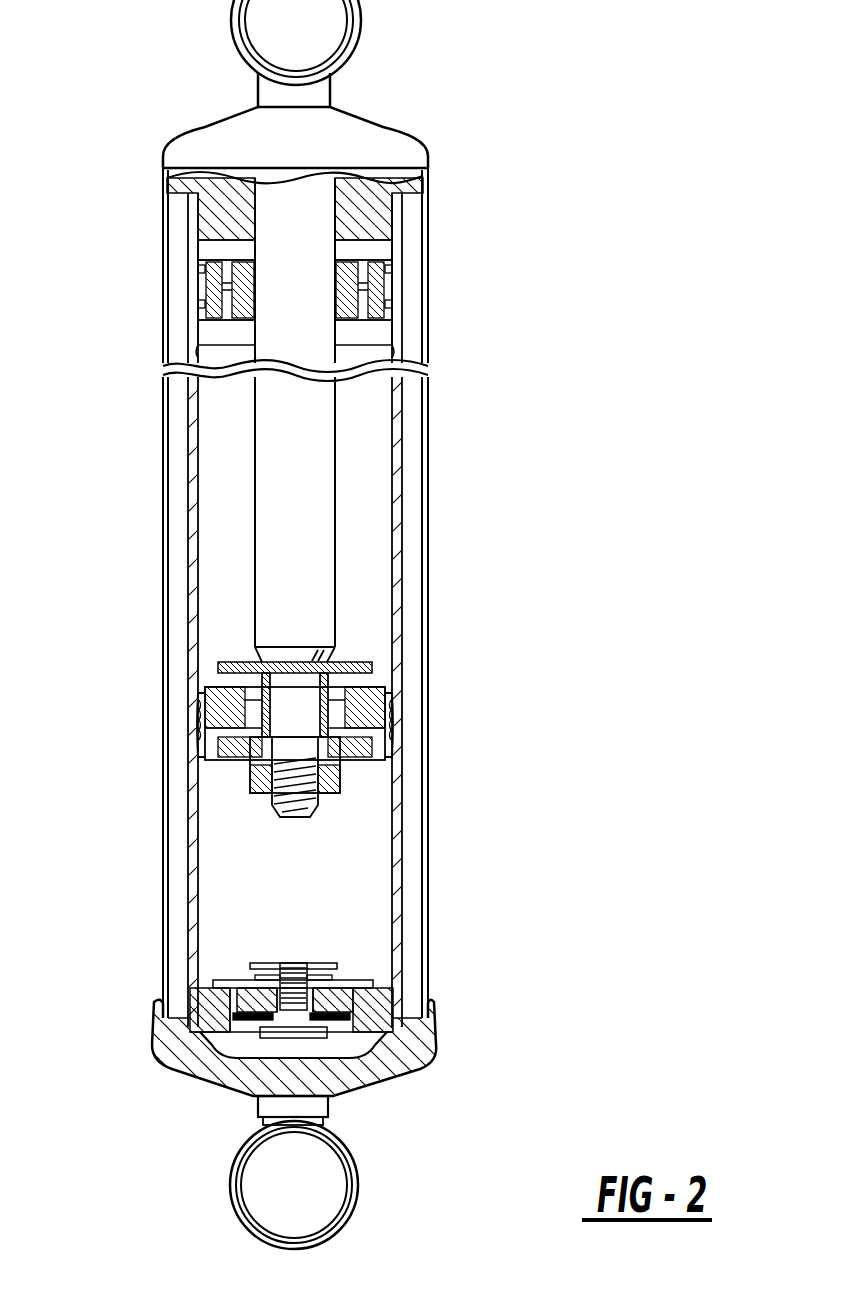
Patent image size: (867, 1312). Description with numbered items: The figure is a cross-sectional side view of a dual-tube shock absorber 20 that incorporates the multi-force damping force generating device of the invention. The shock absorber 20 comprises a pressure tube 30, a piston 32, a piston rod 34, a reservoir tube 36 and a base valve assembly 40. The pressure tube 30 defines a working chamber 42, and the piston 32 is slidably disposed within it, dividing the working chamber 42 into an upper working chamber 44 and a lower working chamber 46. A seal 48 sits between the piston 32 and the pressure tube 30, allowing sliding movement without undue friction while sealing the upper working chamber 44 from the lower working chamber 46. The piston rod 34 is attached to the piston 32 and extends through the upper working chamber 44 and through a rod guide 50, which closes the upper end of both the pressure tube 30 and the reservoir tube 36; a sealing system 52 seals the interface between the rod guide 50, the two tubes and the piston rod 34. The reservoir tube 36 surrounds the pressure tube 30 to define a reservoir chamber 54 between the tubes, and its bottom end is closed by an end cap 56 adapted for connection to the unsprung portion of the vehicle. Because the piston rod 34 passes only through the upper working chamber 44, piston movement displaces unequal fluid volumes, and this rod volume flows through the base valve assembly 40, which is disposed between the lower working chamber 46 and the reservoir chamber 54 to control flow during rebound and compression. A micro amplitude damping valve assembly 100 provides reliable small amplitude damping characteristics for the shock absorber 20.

The shock absorber 20 is at (466, 72).
The pressure tube 30 is at (397, 502).
The piston 32 is at (387, 705).
The piston rod 34 is at (300, 558).
The reservoir tube 36 is at (430, 792).
The base valve assembly 40 is at (383, 1003).
The working chamber 42 is at (301, 893).
The upper working chamber 44 is at (355, 575).
The lower working chamber 46 is at (230, 823).
The seal 48 is at (200, 717).
The rod guide 50 is at (375, 215).
The sealing system 52 is at (253, 130).
The reservoir chamber 54 is at (178, 528).
The end cap 56 is at (200, 1053).
The micro amplitude damping valve assembly 100 is at (410, 302).